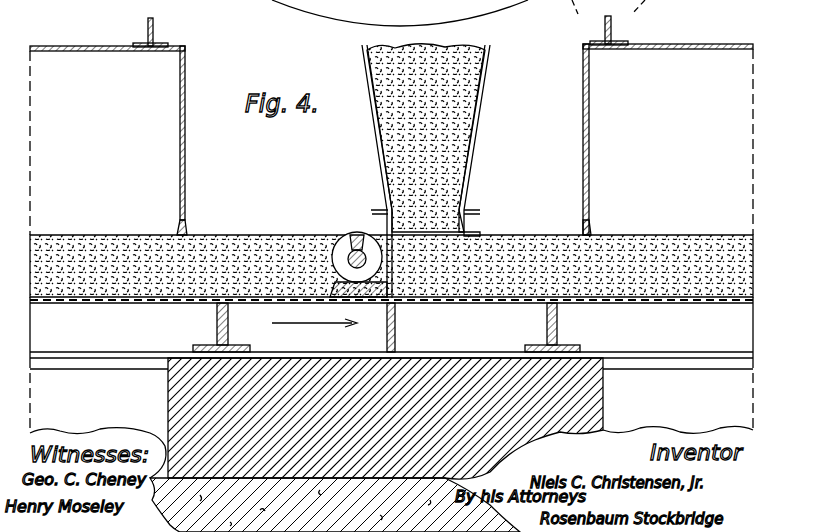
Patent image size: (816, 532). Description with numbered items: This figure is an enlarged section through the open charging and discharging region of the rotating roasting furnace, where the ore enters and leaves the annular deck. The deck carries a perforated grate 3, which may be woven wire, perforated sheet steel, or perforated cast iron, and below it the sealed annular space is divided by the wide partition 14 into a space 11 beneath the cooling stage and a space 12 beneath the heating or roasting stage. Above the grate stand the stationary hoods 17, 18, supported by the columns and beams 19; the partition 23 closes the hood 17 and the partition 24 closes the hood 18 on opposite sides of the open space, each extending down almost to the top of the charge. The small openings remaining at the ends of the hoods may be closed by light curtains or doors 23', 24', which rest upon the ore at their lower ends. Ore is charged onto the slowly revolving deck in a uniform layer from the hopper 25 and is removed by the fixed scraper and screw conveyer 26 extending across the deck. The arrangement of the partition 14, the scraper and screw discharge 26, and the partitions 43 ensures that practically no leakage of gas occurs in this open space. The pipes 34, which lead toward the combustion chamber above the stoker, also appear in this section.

The perforated grate 3 is at (119, 305).
The sealed space beneath cooling stage 11 is at (99, 418).
The sealed space beneath heating stage 12 is at (678, 395).
The wide partition 14 is at (603, 404).
The hood 17 is at (98, 46).
The hood 18 is at (668, 49).
The columns and beams 19 is at (155, 31).
The partition 23 is at (209, 133).
The curtain or door 23' is at (210, 217).
The partition 24 is at (559, 139).
The curtain or door 24' is at (563, 213).
The hopper 25 is at (490, 86).
The scraper and screw conveyer 26 is at (357, 233).
The pipes 34 is at (582, 13).
The partitions 43 is at (229, 321).